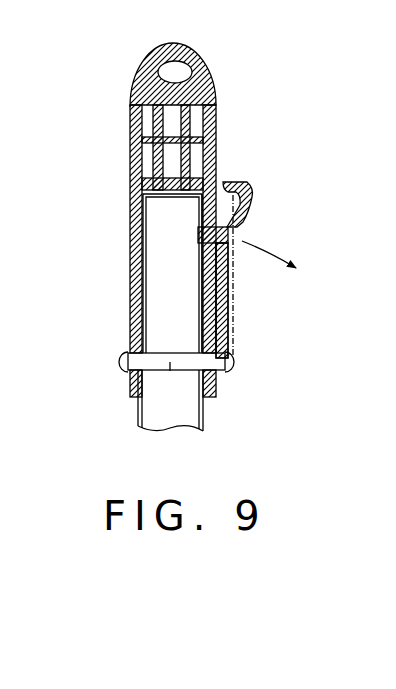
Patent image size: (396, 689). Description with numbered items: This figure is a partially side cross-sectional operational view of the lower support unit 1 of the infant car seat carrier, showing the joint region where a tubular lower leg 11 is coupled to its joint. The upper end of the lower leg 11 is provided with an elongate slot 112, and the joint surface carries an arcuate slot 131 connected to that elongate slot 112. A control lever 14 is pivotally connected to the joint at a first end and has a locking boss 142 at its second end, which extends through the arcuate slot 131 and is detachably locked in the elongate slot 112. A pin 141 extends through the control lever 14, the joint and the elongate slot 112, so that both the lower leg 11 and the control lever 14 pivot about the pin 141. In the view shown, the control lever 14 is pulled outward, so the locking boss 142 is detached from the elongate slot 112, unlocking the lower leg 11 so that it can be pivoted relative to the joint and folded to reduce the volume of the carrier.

The lower support unit 1 is at (314, 138).
The control lever 14 is at (226, 183).
The locking boss 142 is at (228, 236).
The arcuate slot 131 is at (222, 277).
The elongate slot 112 is at (193, 327).
The pin 141 is at (170, 362).
The lower leg 11 is at (203, 417).